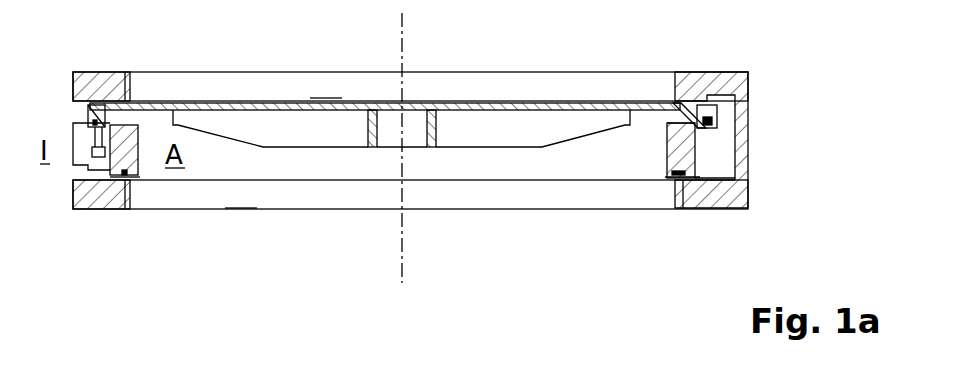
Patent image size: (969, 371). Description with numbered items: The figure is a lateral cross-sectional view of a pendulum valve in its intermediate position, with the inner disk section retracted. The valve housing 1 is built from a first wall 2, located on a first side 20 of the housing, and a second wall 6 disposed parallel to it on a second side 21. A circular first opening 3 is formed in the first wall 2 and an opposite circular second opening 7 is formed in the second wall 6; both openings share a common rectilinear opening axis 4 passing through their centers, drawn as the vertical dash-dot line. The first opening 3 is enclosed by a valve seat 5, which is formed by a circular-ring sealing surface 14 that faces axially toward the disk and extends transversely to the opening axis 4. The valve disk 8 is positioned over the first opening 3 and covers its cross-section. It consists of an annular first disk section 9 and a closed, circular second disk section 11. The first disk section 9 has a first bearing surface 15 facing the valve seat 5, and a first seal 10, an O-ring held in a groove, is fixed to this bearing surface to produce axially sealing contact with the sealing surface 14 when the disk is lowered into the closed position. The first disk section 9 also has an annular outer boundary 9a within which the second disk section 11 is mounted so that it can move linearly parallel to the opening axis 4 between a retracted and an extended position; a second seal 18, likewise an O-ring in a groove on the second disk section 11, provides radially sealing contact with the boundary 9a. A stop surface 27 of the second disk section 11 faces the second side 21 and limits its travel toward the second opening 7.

The valve housing 1 is at (75, 55).
The first wall 2 is at (708, 219).
The first opening 3 is at (410, 224).
The opening axis 4 is at (368, 153).
The valve seat 5 is at (368, 188).
The second wall 6 is at (683, 90).
The second opening 7 is at (410, 61).
The valve disk 8 is at (401, 84).
The first disk section 9 is at (755, 142).
The outer boundary 9a is at (763, 98).
The first seal 10 is at (764, 159).
The second disk section 11 is at (385, 69).
The sealing surface 14 is at (773, 224).
The first bearing surface 15 is at (767, 197).
The second seal 18 is at (776, 84).
The first side 20 is at (241, 195).
The second side 21 is at (326, 85).
The stop surface 27 is at (639, 78).